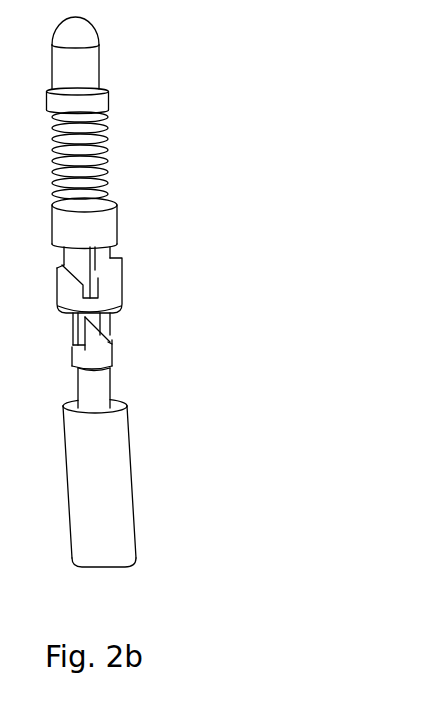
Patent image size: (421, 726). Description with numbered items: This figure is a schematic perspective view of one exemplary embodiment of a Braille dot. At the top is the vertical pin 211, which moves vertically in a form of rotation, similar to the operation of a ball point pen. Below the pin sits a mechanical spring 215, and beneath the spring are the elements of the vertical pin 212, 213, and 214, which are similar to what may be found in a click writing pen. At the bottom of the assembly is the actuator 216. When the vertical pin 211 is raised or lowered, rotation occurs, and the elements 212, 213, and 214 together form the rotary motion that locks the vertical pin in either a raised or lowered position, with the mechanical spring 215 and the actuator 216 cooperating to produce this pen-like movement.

The vertical pin 211 is at (112, 68).
The mechanical spring 215 is at (116, 161).
The element of the vertical pin 212 is at (122, 224).
The element of the vertical pin 213 is at (126, 298).
The element of the vertical pin 214 is at (121, 358).
The actuator 216 is at (137, 494).